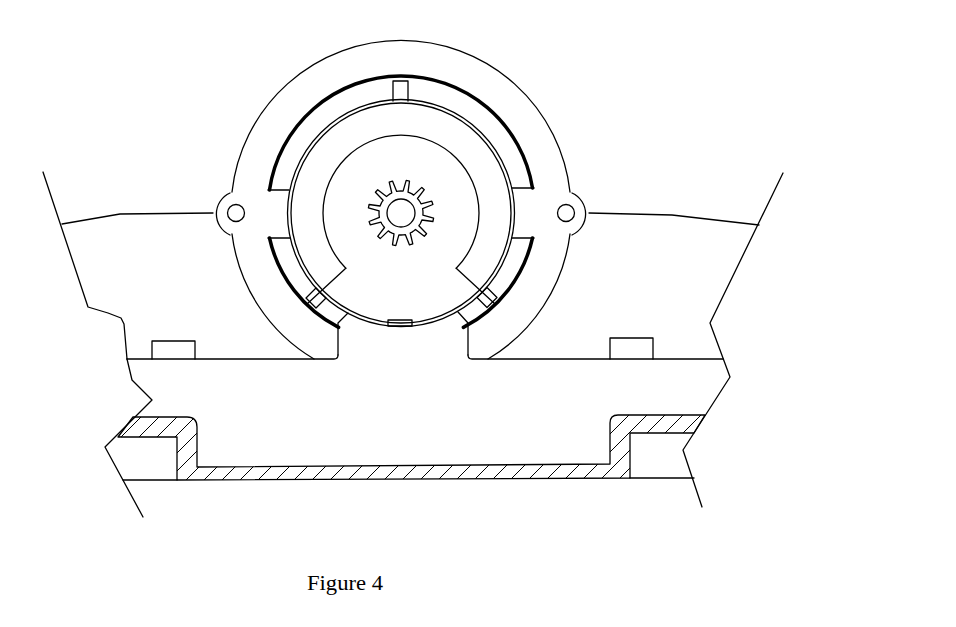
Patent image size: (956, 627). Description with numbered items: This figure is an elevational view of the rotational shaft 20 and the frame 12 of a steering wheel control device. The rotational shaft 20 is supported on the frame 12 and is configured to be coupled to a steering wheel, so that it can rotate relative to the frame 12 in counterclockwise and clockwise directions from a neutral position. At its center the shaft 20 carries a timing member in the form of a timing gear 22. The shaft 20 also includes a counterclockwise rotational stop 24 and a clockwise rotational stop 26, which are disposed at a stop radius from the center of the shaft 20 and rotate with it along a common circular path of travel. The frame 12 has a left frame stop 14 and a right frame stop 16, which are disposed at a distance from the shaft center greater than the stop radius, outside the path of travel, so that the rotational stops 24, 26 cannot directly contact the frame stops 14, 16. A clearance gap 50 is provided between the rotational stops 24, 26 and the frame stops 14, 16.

The frame 12 is at (715, 372).
The left frame stop 14 is at (350, 322).
The right frame stop 16 is at (459, 327).
The rotational shaft 20 is at (461, 62).
The timing gear 22 is at (400, 182).
The counterclockwise rotational stop 24 is at (463, 280).
The clockwise rotational stop 26 is at (343, 288).
The clearance gap 50 is at (343, 312).